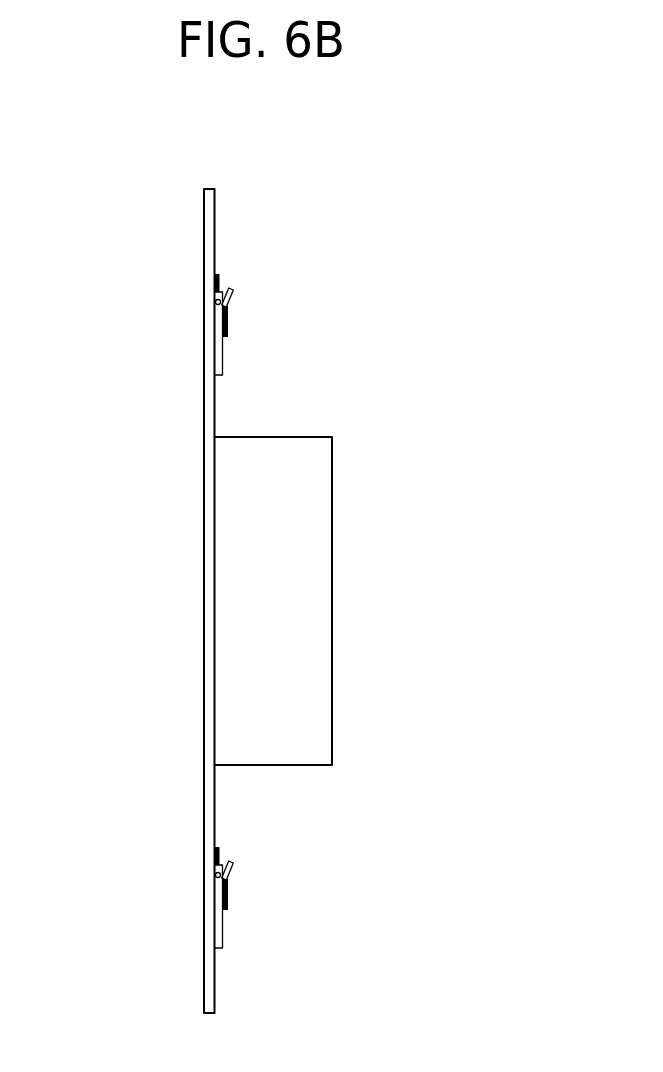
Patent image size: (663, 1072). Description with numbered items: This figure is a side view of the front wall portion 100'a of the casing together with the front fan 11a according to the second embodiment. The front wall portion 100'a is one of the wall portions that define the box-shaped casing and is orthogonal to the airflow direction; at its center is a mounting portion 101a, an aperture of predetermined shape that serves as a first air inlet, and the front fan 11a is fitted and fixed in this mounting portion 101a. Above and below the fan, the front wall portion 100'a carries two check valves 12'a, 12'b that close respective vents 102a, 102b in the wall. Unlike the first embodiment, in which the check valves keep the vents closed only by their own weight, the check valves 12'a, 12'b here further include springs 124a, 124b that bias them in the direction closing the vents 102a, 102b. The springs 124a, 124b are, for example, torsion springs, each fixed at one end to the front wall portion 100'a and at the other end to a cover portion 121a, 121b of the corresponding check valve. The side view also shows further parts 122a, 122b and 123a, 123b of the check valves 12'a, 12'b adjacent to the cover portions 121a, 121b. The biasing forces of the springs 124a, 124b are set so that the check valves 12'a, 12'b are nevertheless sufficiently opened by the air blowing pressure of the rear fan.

The front wall portion 100'a is at (278, 578).
The mounting portion 101a is at (203, 613).
The vent 102a is at (203, 335).
The vent 102b is at (203, 908).
The front fan 11a is at (374, 578).
The check valve 12'a is at (213, 276).
The check valve 12'b is at (213, 929).
The cover portion 121a is at (218, 352).
The cover portion 121b is at (218, 925).
The pin 122a is at (216, 302).
The pin 122b is at (216, 875).
The contact spring 123a is at (233, 305).
The contact spring 123b is at (233, 878).
The spring 124a is at (220, 283).
The spring 124b is at (220, 856).